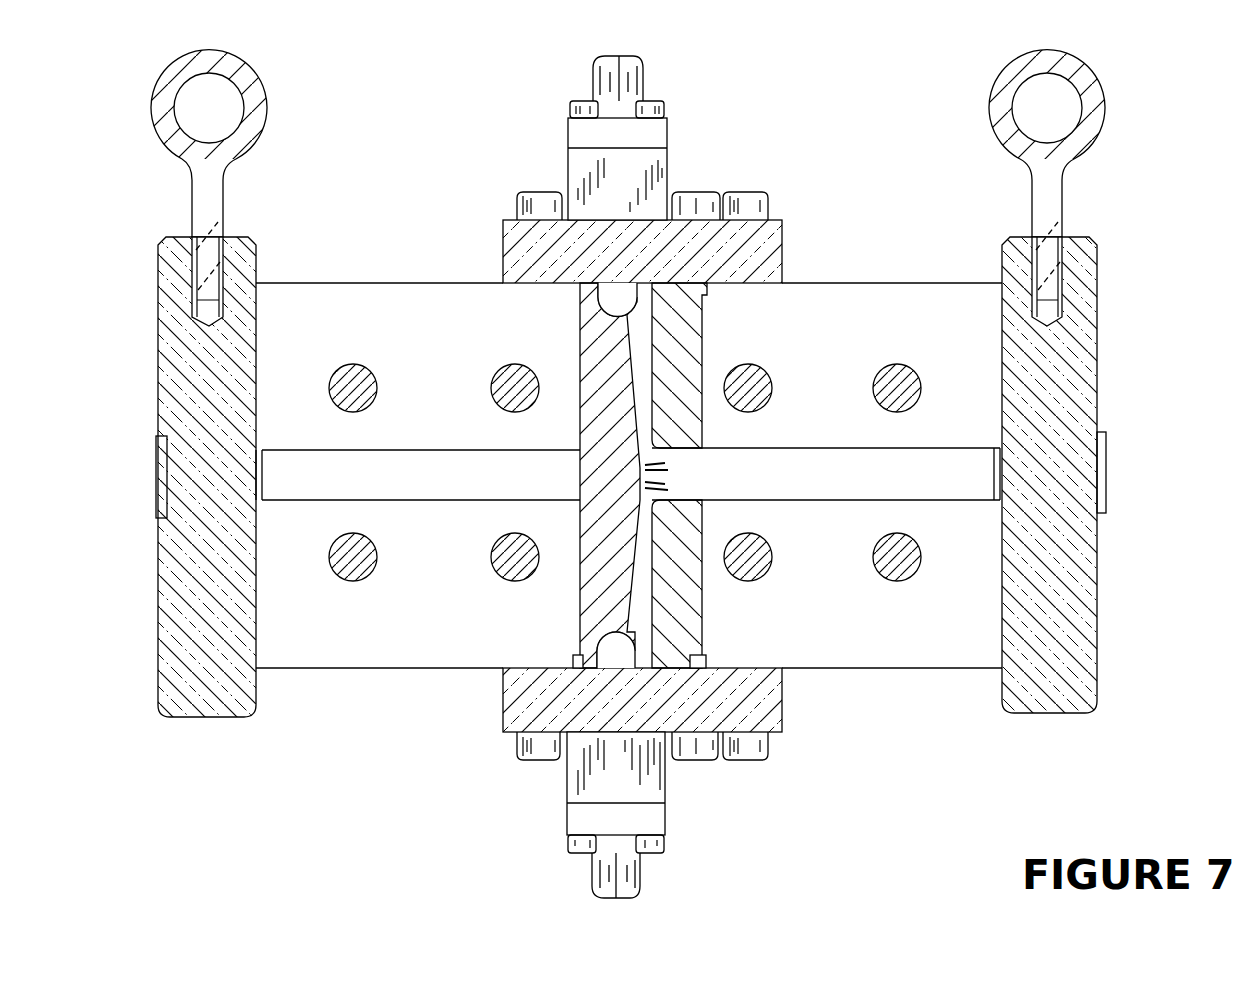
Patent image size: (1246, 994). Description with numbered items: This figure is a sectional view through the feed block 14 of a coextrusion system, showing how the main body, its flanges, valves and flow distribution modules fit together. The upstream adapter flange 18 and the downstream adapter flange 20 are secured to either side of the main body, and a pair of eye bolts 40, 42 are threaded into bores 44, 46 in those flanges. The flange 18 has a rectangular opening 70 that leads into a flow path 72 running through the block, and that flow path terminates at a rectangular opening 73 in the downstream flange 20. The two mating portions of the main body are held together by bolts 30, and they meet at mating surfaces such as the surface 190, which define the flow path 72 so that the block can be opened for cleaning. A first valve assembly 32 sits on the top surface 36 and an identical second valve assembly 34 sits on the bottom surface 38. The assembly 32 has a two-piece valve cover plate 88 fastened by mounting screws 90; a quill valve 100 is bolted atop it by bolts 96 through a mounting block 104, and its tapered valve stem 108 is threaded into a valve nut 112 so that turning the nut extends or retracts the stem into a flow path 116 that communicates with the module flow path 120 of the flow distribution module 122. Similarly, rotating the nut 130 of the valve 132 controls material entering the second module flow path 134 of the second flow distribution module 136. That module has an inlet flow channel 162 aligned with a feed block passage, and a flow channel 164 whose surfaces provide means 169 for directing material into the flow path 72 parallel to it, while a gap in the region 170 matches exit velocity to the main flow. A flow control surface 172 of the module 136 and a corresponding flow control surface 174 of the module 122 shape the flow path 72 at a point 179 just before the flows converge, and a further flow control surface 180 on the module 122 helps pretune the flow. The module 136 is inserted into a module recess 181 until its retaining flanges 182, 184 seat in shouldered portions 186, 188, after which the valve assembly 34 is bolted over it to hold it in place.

The feed block 14 is at (873, 270).
The upstream adapter flange 18 is at (232, 245).
The downstream adapter flange 20 is at (1097, 265).
The bolts 30 is at (366, 368).
The first valve assembly 32 is at (782, 256).
The second valve assembly 34 is at (782, 712).
The top surface 36 is at (404, 285).
The bottom surface 38 is at (372, 670).
The eye bolt 40 is at (256, 144).
The eye bolt 42 is at (990, 116).
The bore 44 is at (218, 270).
The bore 46 is at (1034, 224).
The rectangular opening 70 is at (156, 470).
The flow path 72 is at (447, 503).
The rectangular opening 73 is at (1106, 448).
The valve cover plate 88 is at (503, 240).
The mounting screws 90 is at (540, 192).
The bolts 96 is at (578, 103).
The quill valve 100 is at (627, 77).
The mounting block 104 is at (660, 170).
The tapered valve stem 108 is at (612, 320).
The valve nut 112 is at (600, 72).
The flow path 116 is at (598, 292).
The module flow path 120 is at (645, 343).
The flow distribution module 122 is at (568, 385).
The nut 130 is at (640, 878).
The valve 132 is at (667, 820).
The second module flow path 134 is at (645, 598).
The second flow distribution module 136 is at (572, 560).
The inlet flow channel 162 is at (620, 672).
The flow channel 164 is at (640, 522).
The means for directing the flow 169 is at (672, 496).
The region 170 is at (668, 486).
The flow control surface 172 is at (640, 480).
The flow control surface 174 is at (645, 468).
The point 179 is at (668, 472).
The flow control surface 180 is at (585, 418).
The module recess 181 is at (686, 616).
The retaining flange 182 is at (576, 662).
The retaining flange 184 is at (706, 661).
The shouldered portion 186 is at (590, 636).
The shouldered portion 188 is at (702, 648).
The mating surface 190 is at (940, 672).